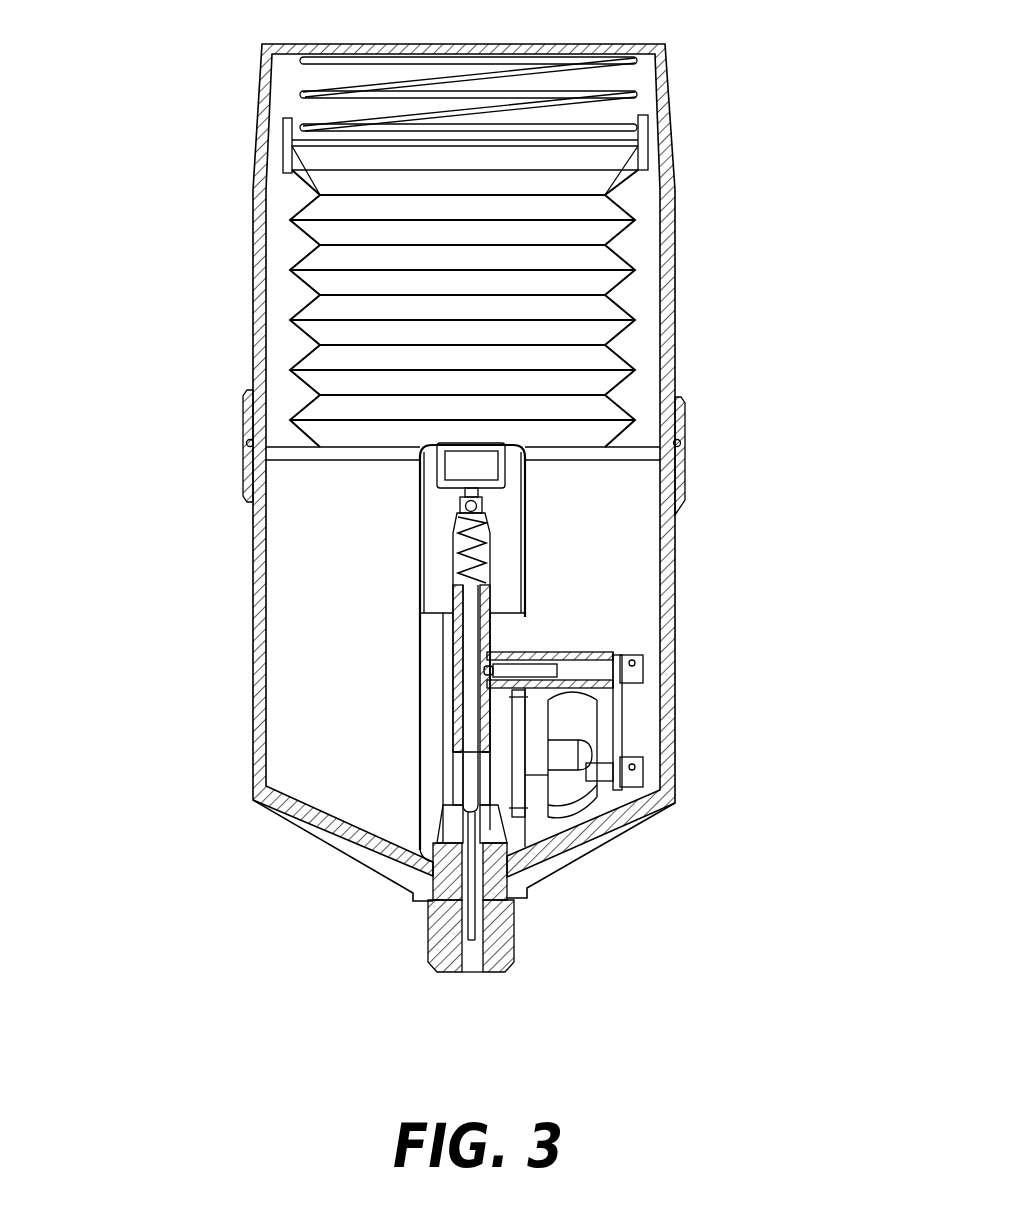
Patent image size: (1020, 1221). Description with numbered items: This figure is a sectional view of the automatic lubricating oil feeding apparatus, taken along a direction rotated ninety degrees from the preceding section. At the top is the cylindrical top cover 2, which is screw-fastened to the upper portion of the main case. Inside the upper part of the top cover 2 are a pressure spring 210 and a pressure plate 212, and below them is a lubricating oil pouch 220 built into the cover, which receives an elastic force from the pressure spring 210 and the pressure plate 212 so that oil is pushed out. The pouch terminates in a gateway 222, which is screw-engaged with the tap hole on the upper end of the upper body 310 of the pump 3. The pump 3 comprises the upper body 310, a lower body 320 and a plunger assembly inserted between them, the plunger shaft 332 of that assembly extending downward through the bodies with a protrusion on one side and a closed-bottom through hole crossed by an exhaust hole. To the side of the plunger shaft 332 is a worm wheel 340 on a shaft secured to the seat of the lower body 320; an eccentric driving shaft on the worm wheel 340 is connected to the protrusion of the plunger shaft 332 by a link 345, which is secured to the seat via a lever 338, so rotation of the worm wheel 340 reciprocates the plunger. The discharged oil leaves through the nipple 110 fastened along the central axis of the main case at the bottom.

The top cover 2 is at (690, 334).
The pressure spring 210 is at (600, 93).
The pressure plate 212 is at (652, 132).
The lubricating oil pouch 220 is at (648, 205).
The gateway 222 is at (452, 460).
The upper body 310 is at (437, 503).
The pump 3 is at (408, 570).
The plunger shaft 332 is at (490, 622).
The lower body 320 is at (432, 688).
The lever 338 is at (603, 653).
The link 345 is at (622, 699).
The worm wheel 340 is at (572, 784).
The nipple 110 is at (487, 930).